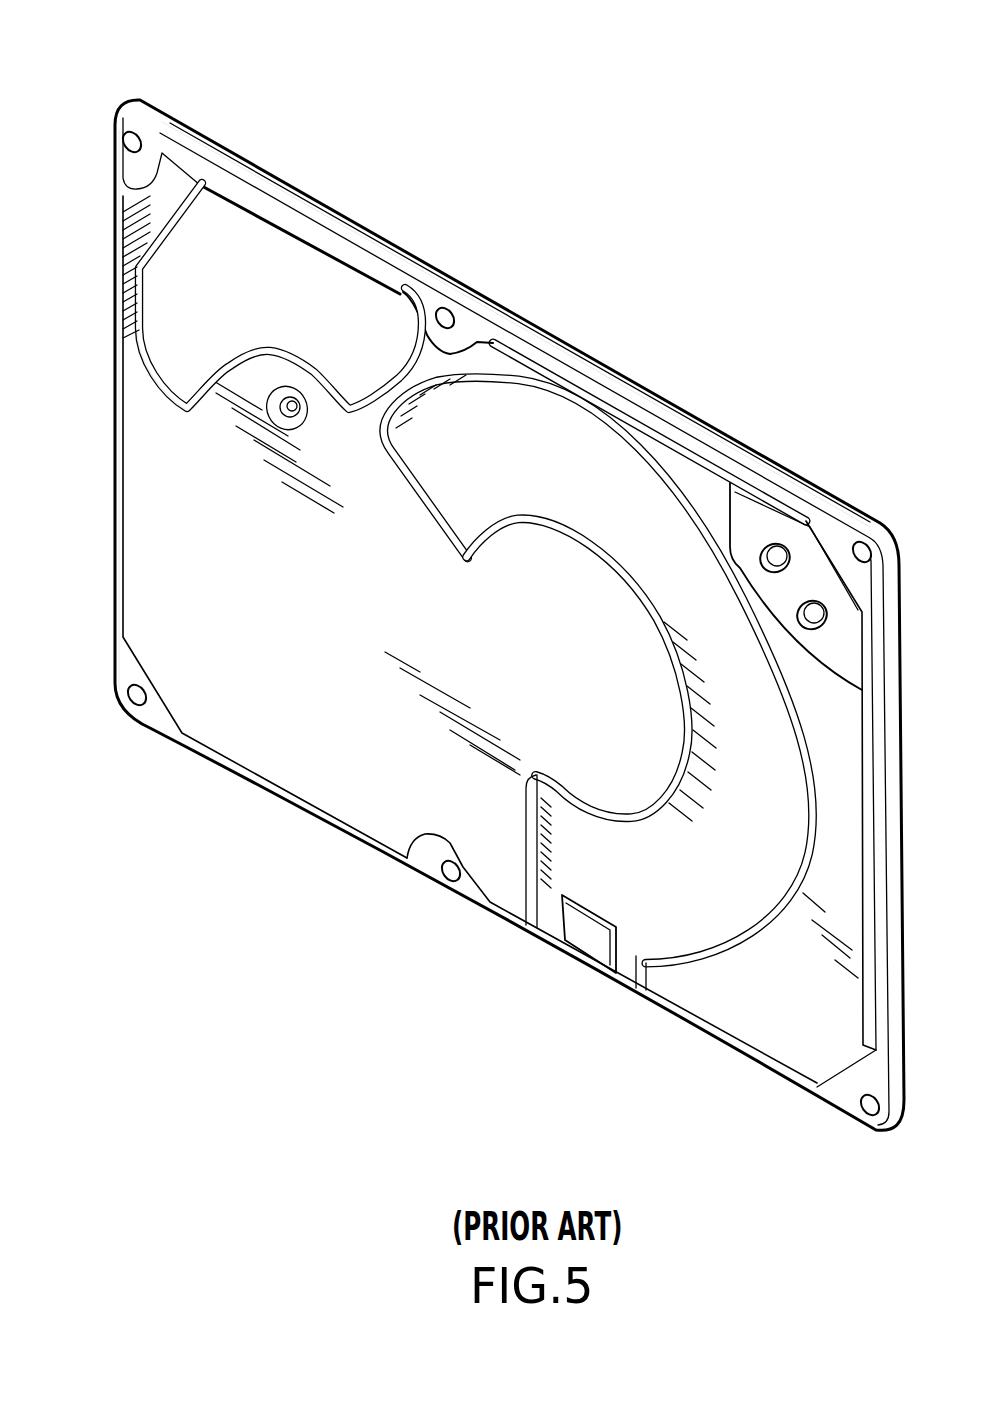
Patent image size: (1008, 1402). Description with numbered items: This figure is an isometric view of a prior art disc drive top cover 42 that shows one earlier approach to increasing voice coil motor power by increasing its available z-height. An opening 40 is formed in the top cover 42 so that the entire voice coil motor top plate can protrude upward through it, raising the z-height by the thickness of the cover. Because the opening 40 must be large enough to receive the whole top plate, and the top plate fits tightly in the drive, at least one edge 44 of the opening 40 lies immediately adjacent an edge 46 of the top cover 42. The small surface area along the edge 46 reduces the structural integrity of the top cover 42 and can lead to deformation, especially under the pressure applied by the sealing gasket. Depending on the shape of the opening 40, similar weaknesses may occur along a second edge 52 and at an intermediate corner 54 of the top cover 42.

The opening 40 is at (191, 428).
The top cover 42 is at (598, 267).
The edge of the opening 44 is at (300, 238).
The edge of the top cover 46 is at (330, 210).
The second edge 52 is at (113, 438).
The intermediate corner 54 is at (132, 100).